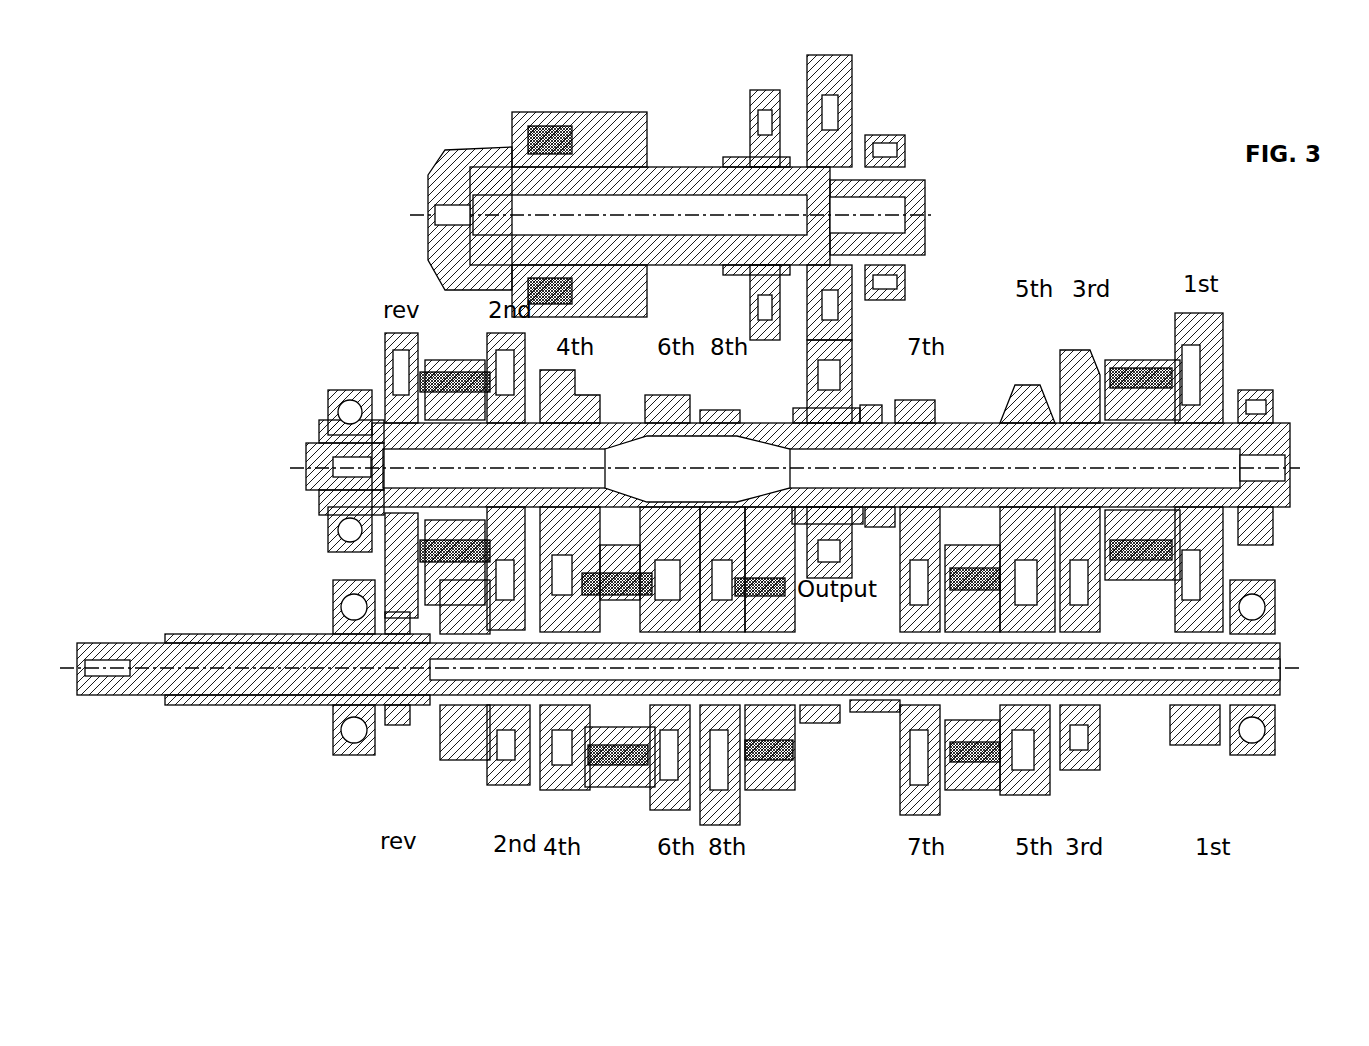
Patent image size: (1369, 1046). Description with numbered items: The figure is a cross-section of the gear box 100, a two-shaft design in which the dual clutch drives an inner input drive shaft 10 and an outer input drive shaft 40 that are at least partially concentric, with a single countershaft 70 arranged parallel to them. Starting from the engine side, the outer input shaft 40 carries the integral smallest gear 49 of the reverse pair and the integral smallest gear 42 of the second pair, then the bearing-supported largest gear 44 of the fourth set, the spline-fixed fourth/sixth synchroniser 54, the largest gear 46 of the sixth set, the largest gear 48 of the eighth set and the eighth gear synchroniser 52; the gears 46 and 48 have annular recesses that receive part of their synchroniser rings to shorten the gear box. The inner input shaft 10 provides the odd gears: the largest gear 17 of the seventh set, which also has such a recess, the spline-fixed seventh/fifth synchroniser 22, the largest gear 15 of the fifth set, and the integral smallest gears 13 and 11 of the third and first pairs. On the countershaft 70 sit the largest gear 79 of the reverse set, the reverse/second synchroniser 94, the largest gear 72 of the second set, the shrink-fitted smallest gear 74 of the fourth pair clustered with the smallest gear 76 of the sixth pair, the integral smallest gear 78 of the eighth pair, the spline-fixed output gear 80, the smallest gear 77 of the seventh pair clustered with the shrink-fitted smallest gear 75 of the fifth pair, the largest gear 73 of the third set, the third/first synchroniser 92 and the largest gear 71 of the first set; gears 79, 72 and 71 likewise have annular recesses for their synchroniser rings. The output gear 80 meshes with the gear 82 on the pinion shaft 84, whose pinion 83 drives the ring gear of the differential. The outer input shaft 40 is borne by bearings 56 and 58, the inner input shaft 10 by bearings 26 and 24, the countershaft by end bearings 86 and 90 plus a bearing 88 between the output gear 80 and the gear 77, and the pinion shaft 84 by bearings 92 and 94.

The inner input drive shaft 10 is at (120, 640).
The smallest gear of the first gear pair 11 is at (1185, 715).
The smallest gear of the third gear pair 13 is at (1097, 745).
The largest gear of the fifth gear set 15 is at (1015, 780).
The largest gear of the seventh gear set 17 is at (905, 800).
The seventh/fifth gear synchroniser 22 is at (975, 775).
The bearing 24 is at (1262, 608).
The bearing 26 is at (870, 705).
The outer input drive shaft 40 is at (258, 633).
The smallest gear of the second gear pair 42 is at (490, 755).
The largest gear of the fourth gear set 44 is at (575, 780).
The largest gear of the sixth gear set 46 is at (660, 795).
The largest gear of the eighth gear set 48 is at (720, 810).
The smallest gear of the reverse gear pair 49 is at (403, 735).
The eighth gear synchroniser 52 is at (770, 780).
The fourth/sixth gear synchroniser 54 is at (620, 775).
The bearing 56 is at (343, 585).
The bearing 58 is at (812, 720).
The countershaft 70 is at (386, 498).
The largest gear of the first gear set 71 is at (1190, 348).
The largest gear of the second gear set 72 is at (470, 352).
The largest gear of the third gear set 73 is at (1072, 367).
The smallest gear of the fourth gear pair 74 is at (578, 378).
The smallest gear of the fifth gear pair 75 is at (1010, 400).
The smallest gear of the sixth gear pair 76 is at (665, 405).
The smallest gear of the seventh gear pair 77 is at (908, 415).
The smallest gear of the eighth gear pair 78 is at (720, 412).
The largest gear of the reverse gear set 79 is at (385, 350).
The output gear 80 is at (805, 378).
The gear on the pinion shaft 82 is at (855, 72).
The pinion 83 is at (455, 150).
The pinion shaft 84 is at (672, 167).
The bearing 86 is at (338, 393).
The bearing 88 is at (880, 410).
The bearing 90 is at (1270, 400).
The third/first gear synchroniser 92 is at (565, 113).
The reverse/second gear synchroniser 94 is at (900, 140).
The gear box 100 is at (324, 806).